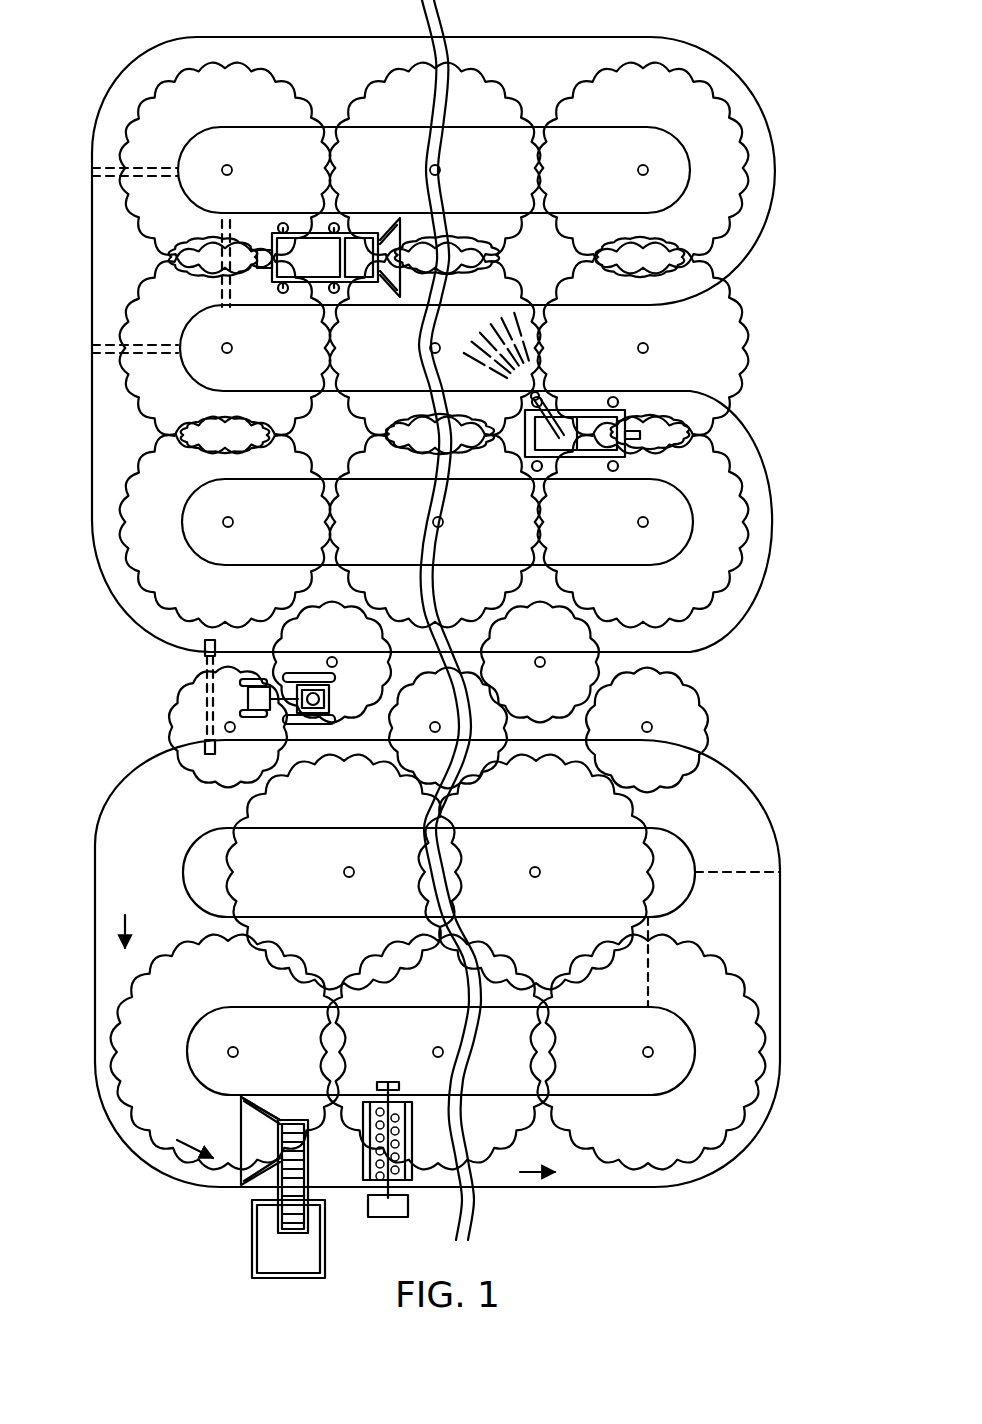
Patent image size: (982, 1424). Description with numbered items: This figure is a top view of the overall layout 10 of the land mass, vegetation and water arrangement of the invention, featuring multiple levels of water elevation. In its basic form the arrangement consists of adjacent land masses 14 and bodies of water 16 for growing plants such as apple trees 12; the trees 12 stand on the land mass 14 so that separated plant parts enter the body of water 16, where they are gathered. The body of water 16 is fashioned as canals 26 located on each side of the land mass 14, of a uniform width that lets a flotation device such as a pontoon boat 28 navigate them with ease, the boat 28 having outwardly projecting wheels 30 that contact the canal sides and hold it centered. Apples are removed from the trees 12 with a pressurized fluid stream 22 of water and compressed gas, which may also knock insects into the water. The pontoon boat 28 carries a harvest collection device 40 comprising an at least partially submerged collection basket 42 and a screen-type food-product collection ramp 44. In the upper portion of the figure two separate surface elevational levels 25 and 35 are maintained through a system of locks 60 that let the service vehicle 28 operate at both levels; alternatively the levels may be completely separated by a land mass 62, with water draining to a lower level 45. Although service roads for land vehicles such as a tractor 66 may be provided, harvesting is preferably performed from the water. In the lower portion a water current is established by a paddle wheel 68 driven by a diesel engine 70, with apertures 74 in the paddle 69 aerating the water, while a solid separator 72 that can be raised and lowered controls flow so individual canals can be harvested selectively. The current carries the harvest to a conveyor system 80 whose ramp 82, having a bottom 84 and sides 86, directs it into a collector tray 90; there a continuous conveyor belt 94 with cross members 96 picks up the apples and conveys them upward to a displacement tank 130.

The overall layout 10 is at (122, 62).
The trees 12 is at (258, 98).
The land mass 14 is at (468, 90).
The body of water 16 is at (733, 85).
The pressurized fluid stream 22 is at (523, 350).
The surface elevational level 25 is at (797, 163).
The canals 26 is at (533, 270).
The pontoon boat 28 is at (408, 344).
The outwardly projecting wheels 30 is at (222, 292).
The surface elevational level 35 is at (801, 520).
The harvest collection device 40 is at (434, 170).
The collection basket 42 is at (357, 275).
The collection ramp 44 is at (388, 292).
The lower level 45 is at (797, 990).
The locks 60 is at (108, 168).
The land mass 62 is at (205, 658).
The tractor 66 is at (256, 697).
The paddle wheel 68 is at (410, 1125).
The paddle 69 is at (402, 1152).
The diesel engine 70 is at (392, 1207).
The solid separator 72 is at (742, 868).
The apertures 74 is at (408, 1127).
The conveyor system 80 is at (261, 1148).
The ramp 82 is at (232, 1116).
The bottom 84 is at (253, 1138).
The sides 86 is at (265, 1097).
The collector tray 90 is at (313, 1139).
The conveyor belt 94 is at (300, 1163).
The cross members 96 is at (290, 1195).
The displacement tank 130 is at (290, 1257).